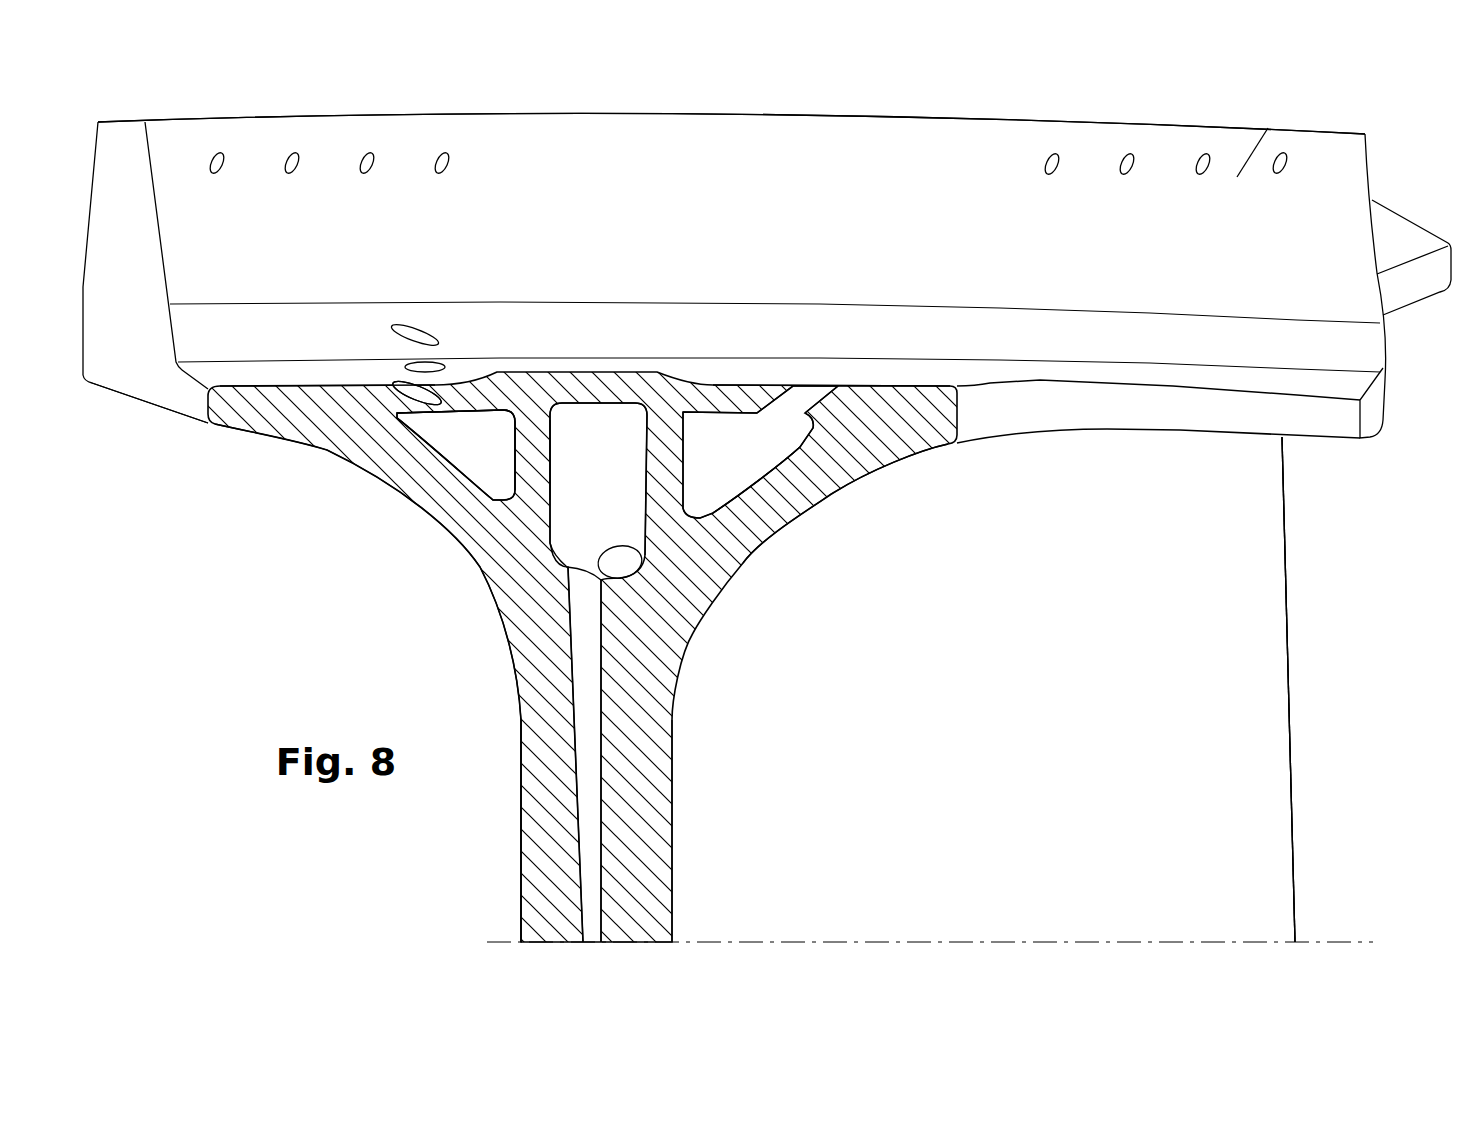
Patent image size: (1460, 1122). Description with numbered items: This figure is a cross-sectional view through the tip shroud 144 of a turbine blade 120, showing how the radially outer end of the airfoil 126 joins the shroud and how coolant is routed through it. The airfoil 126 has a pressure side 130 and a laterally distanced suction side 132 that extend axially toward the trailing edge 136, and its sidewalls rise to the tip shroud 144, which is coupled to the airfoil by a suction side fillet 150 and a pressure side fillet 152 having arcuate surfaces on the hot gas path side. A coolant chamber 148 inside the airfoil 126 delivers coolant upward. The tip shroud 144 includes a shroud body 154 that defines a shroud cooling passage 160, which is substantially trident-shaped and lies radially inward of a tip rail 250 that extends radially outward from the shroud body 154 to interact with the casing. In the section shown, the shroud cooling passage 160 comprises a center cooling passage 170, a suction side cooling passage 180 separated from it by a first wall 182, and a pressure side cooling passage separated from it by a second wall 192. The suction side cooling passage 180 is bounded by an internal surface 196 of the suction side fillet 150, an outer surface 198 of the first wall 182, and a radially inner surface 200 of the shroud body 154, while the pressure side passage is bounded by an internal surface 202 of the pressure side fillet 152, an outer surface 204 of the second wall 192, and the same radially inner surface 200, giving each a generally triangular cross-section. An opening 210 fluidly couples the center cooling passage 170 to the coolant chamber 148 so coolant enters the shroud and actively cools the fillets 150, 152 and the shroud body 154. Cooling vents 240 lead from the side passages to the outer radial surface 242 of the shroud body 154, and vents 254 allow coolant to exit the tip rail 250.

The turbine blade 120 is at (1197, 115).
The airfoil 126 is at (1280, 638).
The pressure side 130 is at (1183, 731).
The suction side 132 is at (520, 673).
The trailing edge 136 is at (1282, 575).
The tip shroud 144 is at (1035, 118).
The coolant chamber 148 is at (593, 851).
The suction side fillet 150 is at (458, 508).
The pressure side fillet 152 is at (907, 457).
The shroud body 154 is at (183, 409).
The shroud cooling passage 160 is at (610, 440).
The center cooling passage 170 is at (598, 440).
The suction side cooling passage 180 is at (496, 480).
The first wall 182 is at (532, 445).
The second wall 192 is at (682, 473).
The internal surface of suction side fillet 196 is at (433, 450).
The outer surface of first wall 198 is at (512, 413).
The radially inner surface of shroud body 200 is at (455, 413).
The internal surface of pressure side fillet 202 is at (763, 483).
The outer surface of second wall 204 is at (687, 467).
The opening 210 is at (587, 585).
The cooling vent 240 is at (424, 368).
The outer radial surface 242 is at (263, 387).
The tip rail 250 is at (1268, 128).
The vent 254 is at (297, 158).